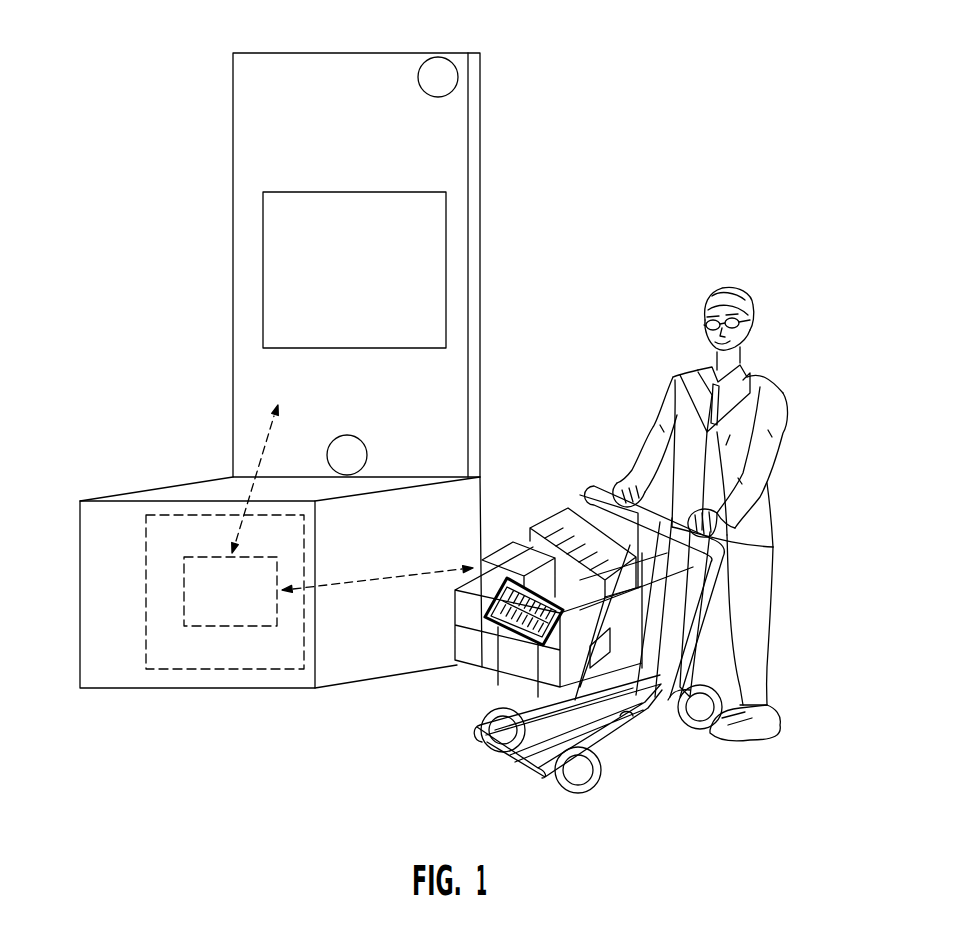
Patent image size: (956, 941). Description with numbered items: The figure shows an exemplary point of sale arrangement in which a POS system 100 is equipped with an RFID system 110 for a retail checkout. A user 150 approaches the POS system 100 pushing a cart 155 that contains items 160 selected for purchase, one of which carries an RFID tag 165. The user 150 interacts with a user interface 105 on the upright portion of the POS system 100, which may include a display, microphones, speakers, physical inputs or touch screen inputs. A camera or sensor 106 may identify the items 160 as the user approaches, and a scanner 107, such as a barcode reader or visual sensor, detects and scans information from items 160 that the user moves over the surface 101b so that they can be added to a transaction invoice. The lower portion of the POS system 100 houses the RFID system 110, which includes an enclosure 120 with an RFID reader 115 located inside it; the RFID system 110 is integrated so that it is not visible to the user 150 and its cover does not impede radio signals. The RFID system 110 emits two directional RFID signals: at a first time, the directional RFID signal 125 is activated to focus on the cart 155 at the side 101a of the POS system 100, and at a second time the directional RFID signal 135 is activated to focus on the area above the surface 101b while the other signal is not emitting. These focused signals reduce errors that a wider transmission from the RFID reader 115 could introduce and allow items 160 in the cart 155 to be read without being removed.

The POS system 100 is at (483, 155).
The user interface 105 is at (297, 192).
The camera or sensor 106 is at (438, 77).
The scanner 107 is at (367, 455).
The side 101a is at (450, 527).
The surface 101b is at (318, 493).
The RFID system 110 is at (224, 670).
The RFID reader 115 is at (184, 598).
The enclosure 120 is at (305, 637).
The directional RFID signal 125 is at (484, 556).
The directional RFID signal 135 is at (260, 462).
The user 150 is at (763, 592).
The cart 155 is at (617, 737).
The items 160 is at (598, 644).
The RFID tag 165 is at (512, 597).